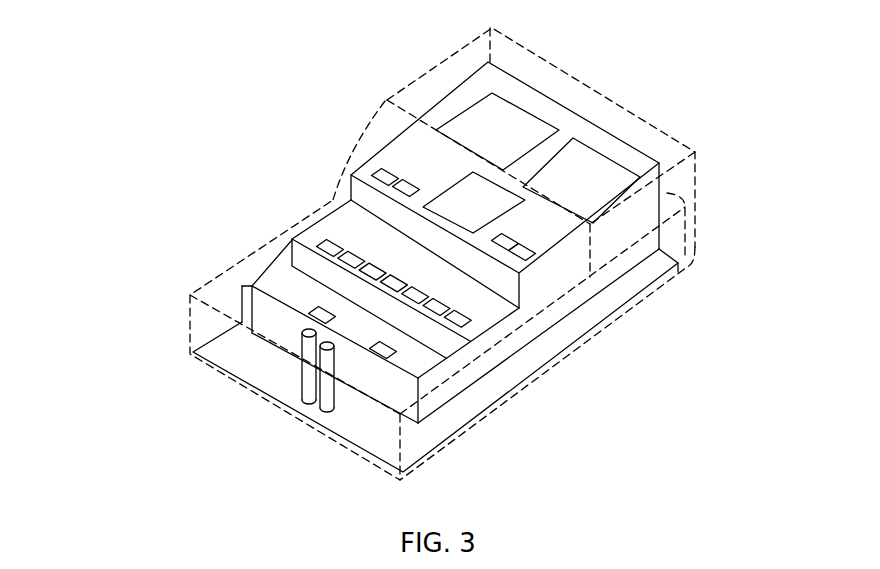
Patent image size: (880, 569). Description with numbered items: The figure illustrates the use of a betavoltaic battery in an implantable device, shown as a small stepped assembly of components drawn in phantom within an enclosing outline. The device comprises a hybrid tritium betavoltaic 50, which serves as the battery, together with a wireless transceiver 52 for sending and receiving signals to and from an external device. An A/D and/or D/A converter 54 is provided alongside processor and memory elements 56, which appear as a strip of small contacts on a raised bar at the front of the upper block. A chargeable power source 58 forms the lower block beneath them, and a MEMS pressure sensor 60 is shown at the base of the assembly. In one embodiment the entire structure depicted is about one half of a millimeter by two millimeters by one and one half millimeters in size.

The hybrid tritium betavoltaic 50 is at (470, 203).
The wireless transceiver 52 is at (497, 123).
The A/D and/or D/A converter 54 is at (349, 212).
The processor and memory elements 56 is at (312, 226).
The chargeable power source 58 is at (297, 287).
The MEMS pressure sensor 60 is at (277, 379).